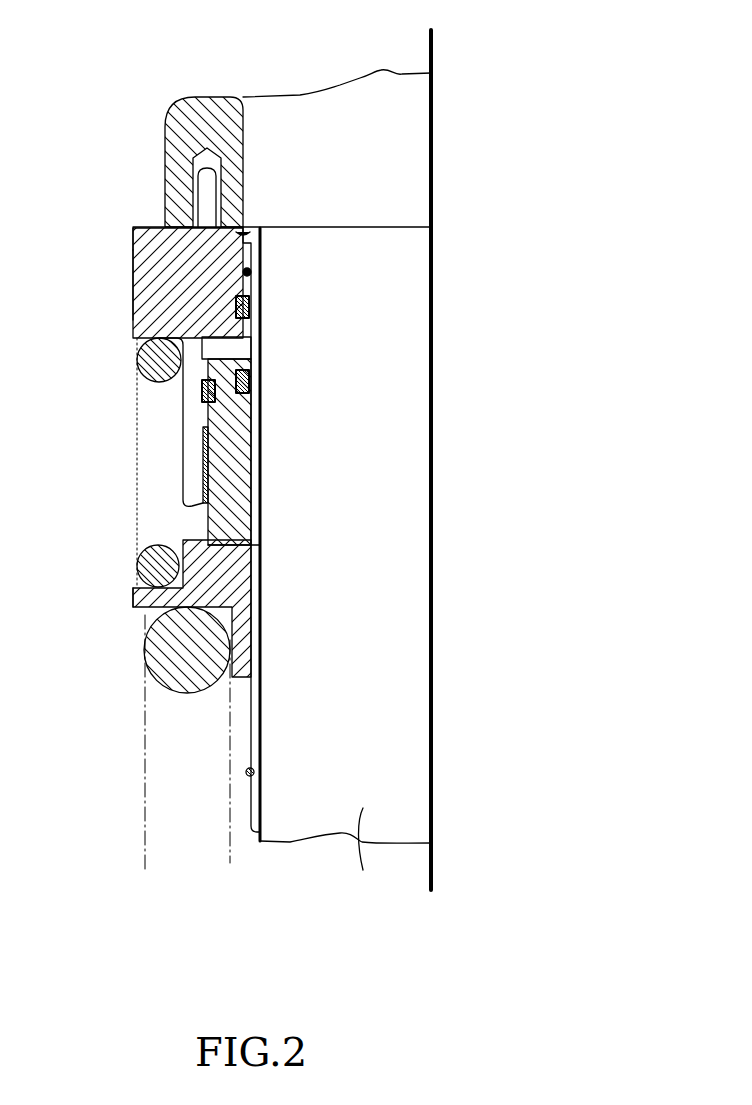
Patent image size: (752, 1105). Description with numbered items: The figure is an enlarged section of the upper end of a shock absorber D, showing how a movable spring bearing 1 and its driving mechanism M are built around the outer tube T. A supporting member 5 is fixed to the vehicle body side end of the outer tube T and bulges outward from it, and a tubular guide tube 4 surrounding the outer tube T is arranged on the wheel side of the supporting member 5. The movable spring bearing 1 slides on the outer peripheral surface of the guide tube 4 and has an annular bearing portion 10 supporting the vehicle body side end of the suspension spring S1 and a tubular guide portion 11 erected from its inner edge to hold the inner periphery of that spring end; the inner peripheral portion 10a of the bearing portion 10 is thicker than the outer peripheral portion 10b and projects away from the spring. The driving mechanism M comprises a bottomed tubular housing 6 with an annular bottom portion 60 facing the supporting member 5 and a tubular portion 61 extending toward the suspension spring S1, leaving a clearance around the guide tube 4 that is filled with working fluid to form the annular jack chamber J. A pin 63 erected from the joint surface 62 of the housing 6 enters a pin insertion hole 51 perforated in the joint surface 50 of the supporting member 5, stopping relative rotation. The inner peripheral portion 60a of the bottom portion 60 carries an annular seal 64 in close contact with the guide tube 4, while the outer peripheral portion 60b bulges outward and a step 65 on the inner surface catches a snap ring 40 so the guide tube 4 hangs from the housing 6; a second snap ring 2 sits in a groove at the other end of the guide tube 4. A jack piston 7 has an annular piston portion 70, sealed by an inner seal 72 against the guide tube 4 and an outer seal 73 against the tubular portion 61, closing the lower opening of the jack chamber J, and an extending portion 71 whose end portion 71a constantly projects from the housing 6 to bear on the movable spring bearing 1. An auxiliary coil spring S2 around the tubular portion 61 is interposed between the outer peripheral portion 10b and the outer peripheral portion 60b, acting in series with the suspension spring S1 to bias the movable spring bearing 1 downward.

The movable spring bearing 1 is at (128, 598).
The snap ring 2 is at (247, 775).
The guide tube 4 is at (255, 720).
The supporting member 5 is at (173, 141).
The housing 6 is at (131, 224).
The jack piston 7 is at (200, 492).
The bearing portion 10 is at (184, 617).
The inner peripheral portion 10a is at (236, 532).
The outer peripheral portion 10b is at (165, 604).
The guide portion 11 is at (246, 656).
The snap ring 40 is at (262, 270).
The joint surface 50 is at (246, 230).
The pin insertion hole 51 is at (217, 162).
The bottom portion 60 is at (205, 269).
The inner peripheral portion 60a is at (253, 275).
The outer peripheral portion 60b is at (140, 292).
The tubular portion 61 is at (115, 461).
The joint surface 62 is at (183, 214).
The pin 63 is at (257, 165).
The seal 64 is at (250, 306).
The step 65 is at (148, 256).
The piston portion 70 is at (225, 457).
The extending portion 71 is at (252, 480).
The end portion 71a is at (264, 560).
The seal 72 is at (251, 382).
The seal 73 is at (203, 391).
The shock absorber D is at (258, 834).
The jack chamber J is at (232, 349).
The driving mechanism M is at (197, 458).
The suspension spring S1 is at (165, 668).
The auxiliary spring S2 is at (138, 562).
The outer tube T is at (362, 870).